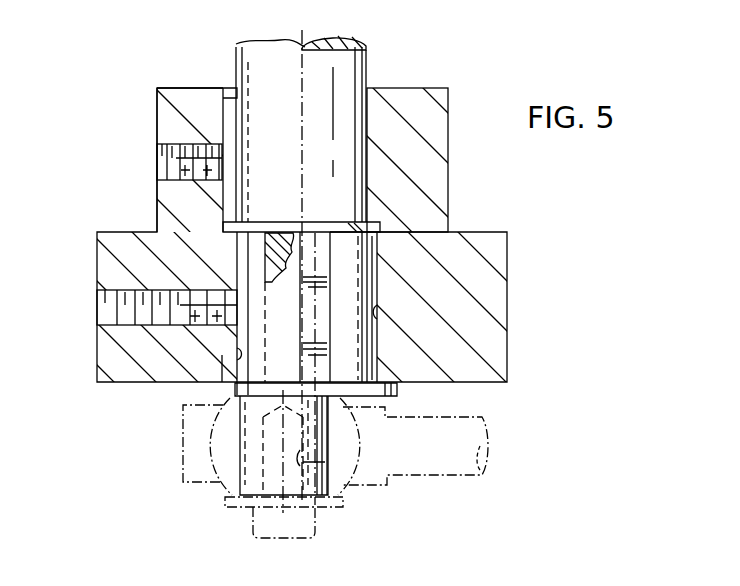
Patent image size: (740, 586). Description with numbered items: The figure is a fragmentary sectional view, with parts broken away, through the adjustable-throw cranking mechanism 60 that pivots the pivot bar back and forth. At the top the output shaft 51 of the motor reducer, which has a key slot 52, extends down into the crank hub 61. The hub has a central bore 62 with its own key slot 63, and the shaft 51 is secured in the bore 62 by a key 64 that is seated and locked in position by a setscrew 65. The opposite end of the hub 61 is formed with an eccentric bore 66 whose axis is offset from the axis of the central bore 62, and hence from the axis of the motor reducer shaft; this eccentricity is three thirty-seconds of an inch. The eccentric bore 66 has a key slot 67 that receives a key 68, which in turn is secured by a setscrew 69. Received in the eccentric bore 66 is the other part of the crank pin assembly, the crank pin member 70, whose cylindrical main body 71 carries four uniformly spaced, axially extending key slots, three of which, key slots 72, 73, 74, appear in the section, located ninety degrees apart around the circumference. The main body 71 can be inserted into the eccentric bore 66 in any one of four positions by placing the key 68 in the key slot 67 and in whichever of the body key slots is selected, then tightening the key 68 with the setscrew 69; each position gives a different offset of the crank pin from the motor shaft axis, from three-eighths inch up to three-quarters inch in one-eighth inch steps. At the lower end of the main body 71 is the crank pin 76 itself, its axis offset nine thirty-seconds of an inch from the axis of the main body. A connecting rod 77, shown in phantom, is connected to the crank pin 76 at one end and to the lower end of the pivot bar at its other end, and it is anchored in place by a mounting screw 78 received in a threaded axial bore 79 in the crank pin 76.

The output shaft 51 is at (326, 48).
The key slot 52 is at (248, 138).
The adjustable-throw cranking mechanism 60 is at (520, 356).
The crank hub 61 is at (507, 283).
The central bore 62 is at (368, 129).
The key slot 63 is at (237, 118).
The key 64 is at (228, 190).
The setscrew 65 is at (178, 160).
The eccentric bore 66 is at (380, 313).
The key slot 67 is at (237, 356).
The key 68 is at (258, 252).
The setscrew 69 is at (192, 320).
The crank pin member 70 is at (397, 403).
The cylindrical main body 71 is at (378, 253).
The key slot 72 is at (270, 268).
The key slot 73 is at (318, 240).
The key slot 74 is at (368, 286).
The crank pin 76 is at (248, 468).
The connecting rod 77 is at (421, 476).
The mounting screw 78 is at (318, 525).
The threaded axial bore 79 is at (330, 469).